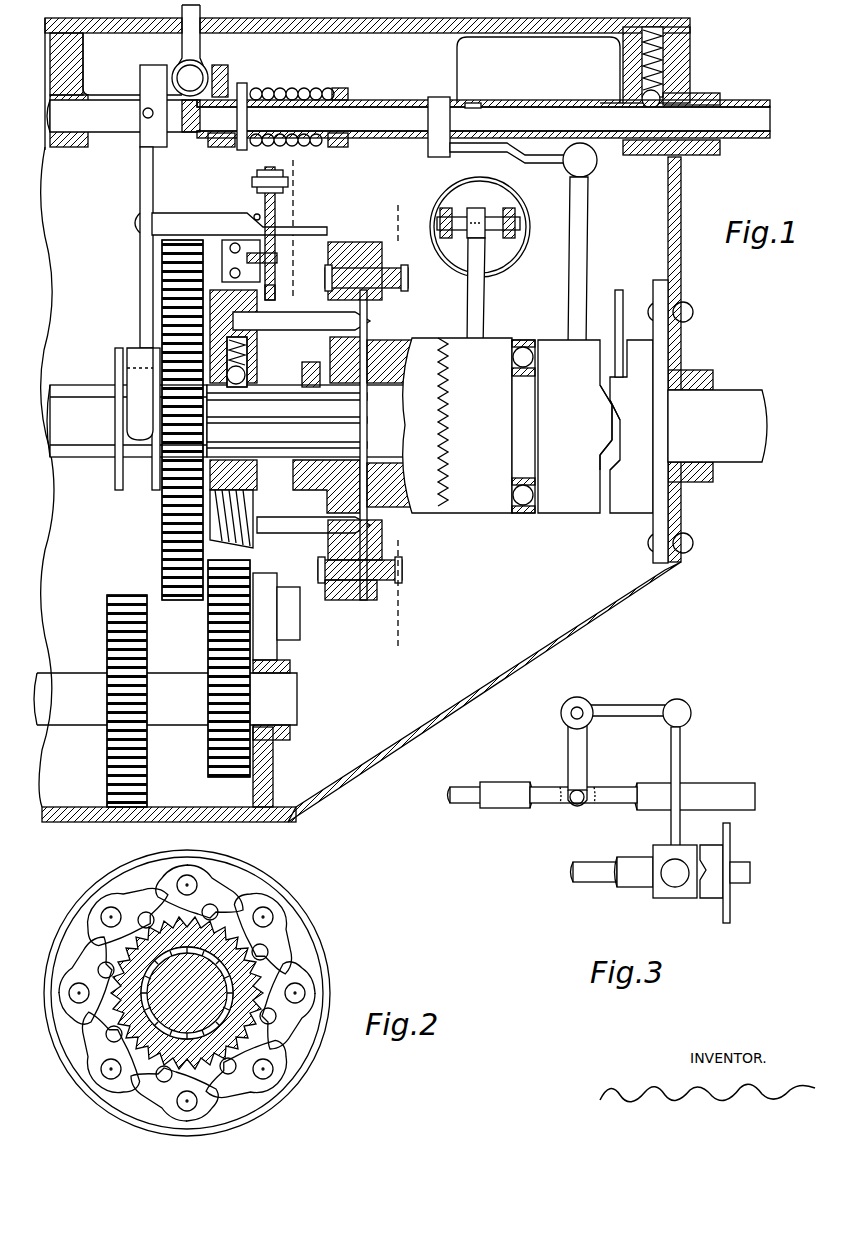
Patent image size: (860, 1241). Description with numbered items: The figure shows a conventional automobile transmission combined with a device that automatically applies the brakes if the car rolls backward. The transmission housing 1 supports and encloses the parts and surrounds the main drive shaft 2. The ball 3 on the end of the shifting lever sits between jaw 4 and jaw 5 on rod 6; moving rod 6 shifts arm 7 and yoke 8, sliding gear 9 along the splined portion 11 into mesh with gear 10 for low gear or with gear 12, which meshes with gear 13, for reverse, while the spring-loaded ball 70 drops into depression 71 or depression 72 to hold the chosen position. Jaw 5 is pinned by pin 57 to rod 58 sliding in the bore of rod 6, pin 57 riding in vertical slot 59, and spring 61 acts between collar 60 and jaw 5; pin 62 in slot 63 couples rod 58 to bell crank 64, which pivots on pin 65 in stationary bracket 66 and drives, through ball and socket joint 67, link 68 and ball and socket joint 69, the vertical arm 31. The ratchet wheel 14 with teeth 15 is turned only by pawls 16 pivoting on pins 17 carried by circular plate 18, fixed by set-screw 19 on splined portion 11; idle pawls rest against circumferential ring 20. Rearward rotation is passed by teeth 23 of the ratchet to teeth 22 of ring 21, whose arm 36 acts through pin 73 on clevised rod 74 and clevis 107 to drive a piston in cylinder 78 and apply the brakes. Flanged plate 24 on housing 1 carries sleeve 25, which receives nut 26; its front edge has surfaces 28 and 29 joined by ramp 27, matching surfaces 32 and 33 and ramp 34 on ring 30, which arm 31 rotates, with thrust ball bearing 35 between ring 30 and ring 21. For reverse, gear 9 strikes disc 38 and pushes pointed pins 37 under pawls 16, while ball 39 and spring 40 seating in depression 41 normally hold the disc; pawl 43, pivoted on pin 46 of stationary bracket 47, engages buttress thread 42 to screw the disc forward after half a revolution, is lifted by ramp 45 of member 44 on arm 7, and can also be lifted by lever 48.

In FIG. 1, the transmission housing 1 is at (625, 615).
In FIG. 1, the main drive shaft 2 is at (735, 468).
In FIG. 3, the main drive shaft 2 is at (740, 868).
In FIG. 1, the ball 3 is at (195, 68).
In FIG. 1, the jaw 4 is at (152, 73).
In FIG. 1, the jaw 5 is at (235, 72).
In FIG. 1, the rod 6 is at (118, 135).
In FIG. 3, the rod 6 is at (497, 785).
In FIG. 1, the arm 7 is at (135, 303).
In FIG. 1, the yoke 8 is at (135, 380).
In FIG. 1, the gear 9 is at (160, 535).
In FIG. 1, the gear 10 is at (107, 630).
In FIG. 1, the splined portion 11 is at (80, 385).
In FIG. 1, the gear 12 is at (228, 597).
In FIG. 1, the gear 13 is at (205, 747).
In FIG. 1, the ratchet wheel 14 is at (422, 348).
In FIG. 2, the ratchet wheel 14 is at (205, 1050).
In FIG. 1, the teeth 15 is at (390, 338).
In FIG. 2, the teeth 15 is at (270, 975).
In FIG. 1, the pawls 16 is at (400, 305).
In FIG. 2, the pawls 16 is at (280, 922).
In FIG. 1, the pins 17 is at (405, 575).
In FIG. 2, the pins 17 is at (270, 1070).
In FIG. 1, the circular plate 18 is at (320, 490).
In FIG. 2, the circular plate 18 is at (292, 1057).
In FIG. 1, the set-screw 19 is at (312, 362).
In FIG. 1, the circumferential ring 20 is at (365, 600).
In FIG. 2, the circumferential ring 20 is at (250, 1123).
In FIG. 1, the ring 21 is at (500, 335).
In FIG. 1, the teeth 22 is at (447, 452).
In FIG. 1, the teeth 23 is at (438, 430).
In FIG. 1, the flanged plate 24 is at (635, 516).
In FIG. 3, the flanged plate 24 is at (713, 900).
In FIG. 1, the sleeve 25 is at (619, 335).
In FIG. 3, the sleeve 25 is at (630, 858).
In FIG. 1, the nut 26 is at (405, 513).
In FIG. 1, the ramp 27 is at (612, 410).
In FIG. 1, the surface 28 is at (625, 395).
In FIG. 1, the surface 29 is at (613, 462).
In FIG. 1, the ring 30 is at (570, 515).
In FIG. 3, the ring 30 is at (670, 900).
In FIG. 1, the arm 31 is at (592, 247).
In FIG. 1, the surface 32 is at (612, 408).
In FIG. 1, the surface 33 is at (598, 462).
In FIG. 1, the ramp 34 is at (604, 438).
In FIG. 1, the thrust type ball bearing 35 is at (520, 518).
In FIG. 1, the arm 36 is at (488, 302).
In FIG. 1, the pointed pins 37 is at (295, 528).
In FIG. 2, the pointed pins 37 is at (268, 950).
In FIG. 1, the thick circular disc 38 is at (258, 482).
In FIG. 1, the ball 39 is at (250, 360).
In FIG. 1, the spring 40 is at (250, 345).
In FIG. 1, the depression 41 is at (245, 378).
In FIG. 1, the buttress-shaped thread 42 is at (245, 545).
In FIG. 1, the pawl 43 is at (277, 285).
In FIG. 1, the member 44 is at (320, 222).
In FIG. 1, the ramp 45 is at (257, 215).
In FIG. 1, the pin 46 is at (280, 258).
In FIG. 1, the stationary bracket 47 is at (232, 250).
In FIG. 1, the lever 48 is at (275, 205).
In FIG. 1, the pin 57 is at (247, 82).
In FIG. 1, the rod 58 is at (383, 122).
In FIG. 3, the rod 58 is at (598, 790).
In FIG. 1, the vertical slot 59 is at (276, 140).
In FIG. 1, the collar 60 is at (345, 85).
In FIG. 1, the spring 61 is at (318, 88).
In FIG. 1, the pin 62 is at (442, 98).
In FIG. 3, the pin 62 is at (565, 817).
In FIG. 1, the slot 63 is at (472, 105).
In FIG. 1, the bell crank 64 is at (425, 152).
In FIG. 3, the bell crank 64 is at (590, 758).
In FIG. 3, the pin 65 is at (585, 703).
In FIG. 1, the stationary bracket 66 is at (445, 73).
In FIG. 3, the ball and socket joint 67 is at (690, 710).
In FIG. 3, the link 68 is at (683, 757).
In FIG. 1, the ball and socket joint 69 is at (600, 165).
In FIG. 3, the ball and socket joint 69 is at (670, 877).
In FIG. 1, the spring-loaded ball 70 is at (672, 92).
In FIG. 1, the depression 71 is at (705, 112).
In FIG. 1, the depression 72 is at (600, 105).
In FIG. 1, the pin 73 is at (520, 221).
In FIG. 1, the clevised rod 74 is at (465, 208).
In FIG. 1, the cylinder 78 is at (515, 190).
In FIG. 1, the clevis 107 is at (510, 238).